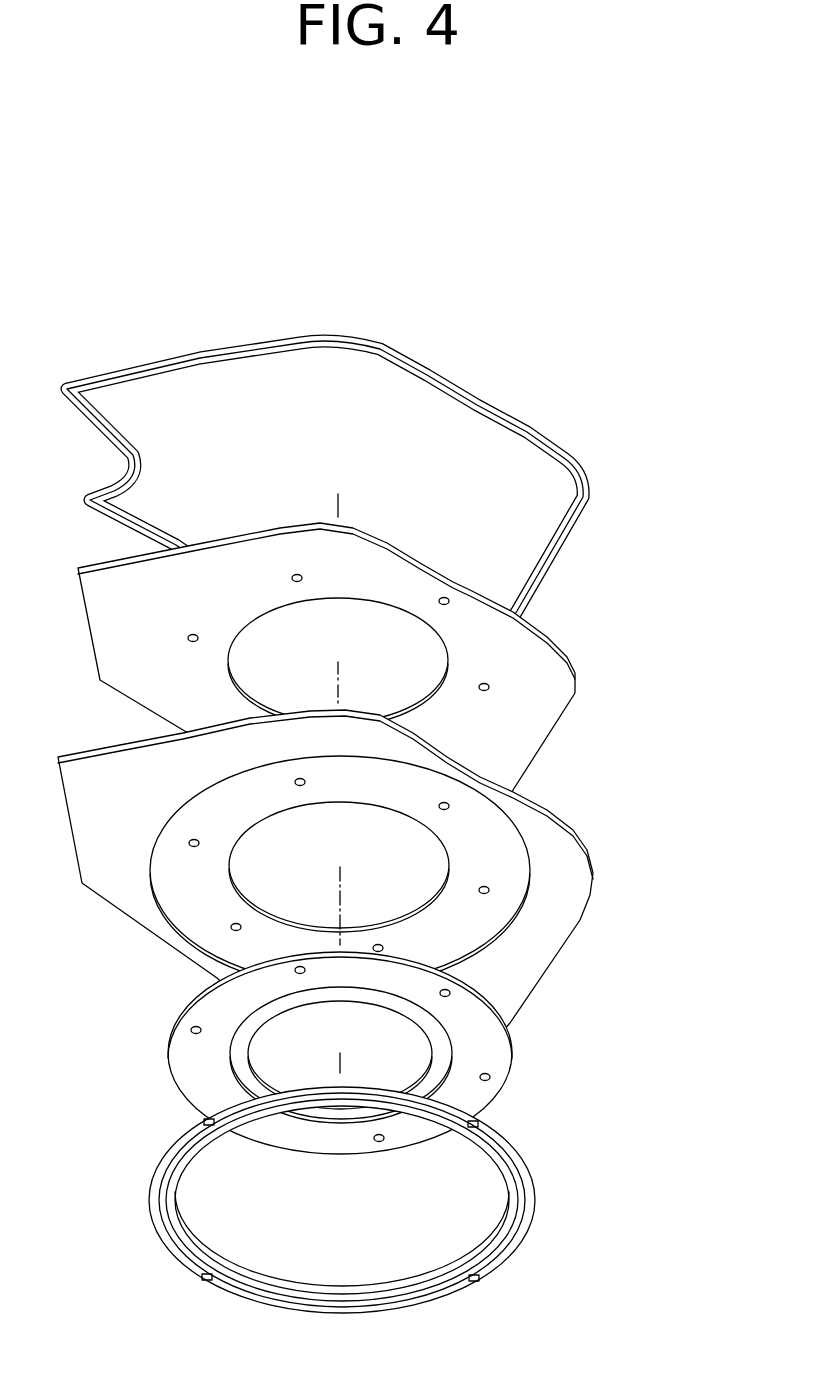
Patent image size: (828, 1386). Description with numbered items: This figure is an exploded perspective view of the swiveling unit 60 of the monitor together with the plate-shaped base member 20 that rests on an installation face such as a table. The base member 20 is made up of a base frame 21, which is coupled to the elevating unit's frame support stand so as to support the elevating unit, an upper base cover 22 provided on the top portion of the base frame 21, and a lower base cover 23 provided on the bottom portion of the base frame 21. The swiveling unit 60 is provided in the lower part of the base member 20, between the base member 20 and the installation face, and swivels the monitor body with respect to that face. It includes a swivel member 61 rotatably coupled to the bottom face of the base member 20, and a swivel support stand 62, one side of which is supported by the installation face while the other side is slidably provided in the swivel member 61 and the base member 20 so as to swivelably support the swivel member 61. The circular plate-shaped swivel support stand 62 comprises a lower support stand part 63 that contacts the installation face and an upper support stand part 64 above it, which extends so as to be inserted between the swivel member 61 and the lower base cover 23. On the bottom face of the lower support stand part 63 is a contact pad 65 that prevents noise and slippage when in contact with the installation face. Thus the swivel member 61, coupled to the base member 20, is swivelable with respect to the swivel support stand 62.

The base member 20 is at (397, 690).
The base frame 21 is at (574, 665).
The upper base cover 22 is at (597, 493).
The lower base cover 23 is at (369, 875).
The swiveling unit 60 is at (349, 1155).
The swivel member 61 is at (505, 1053).
The swivel support stand 62 is at (406, 1222).
The lower support stand part 63 is at (533, 1220).
The upper support stand part 64 is at (519, 1165).
The contact pad 65 is at (207, 1284).